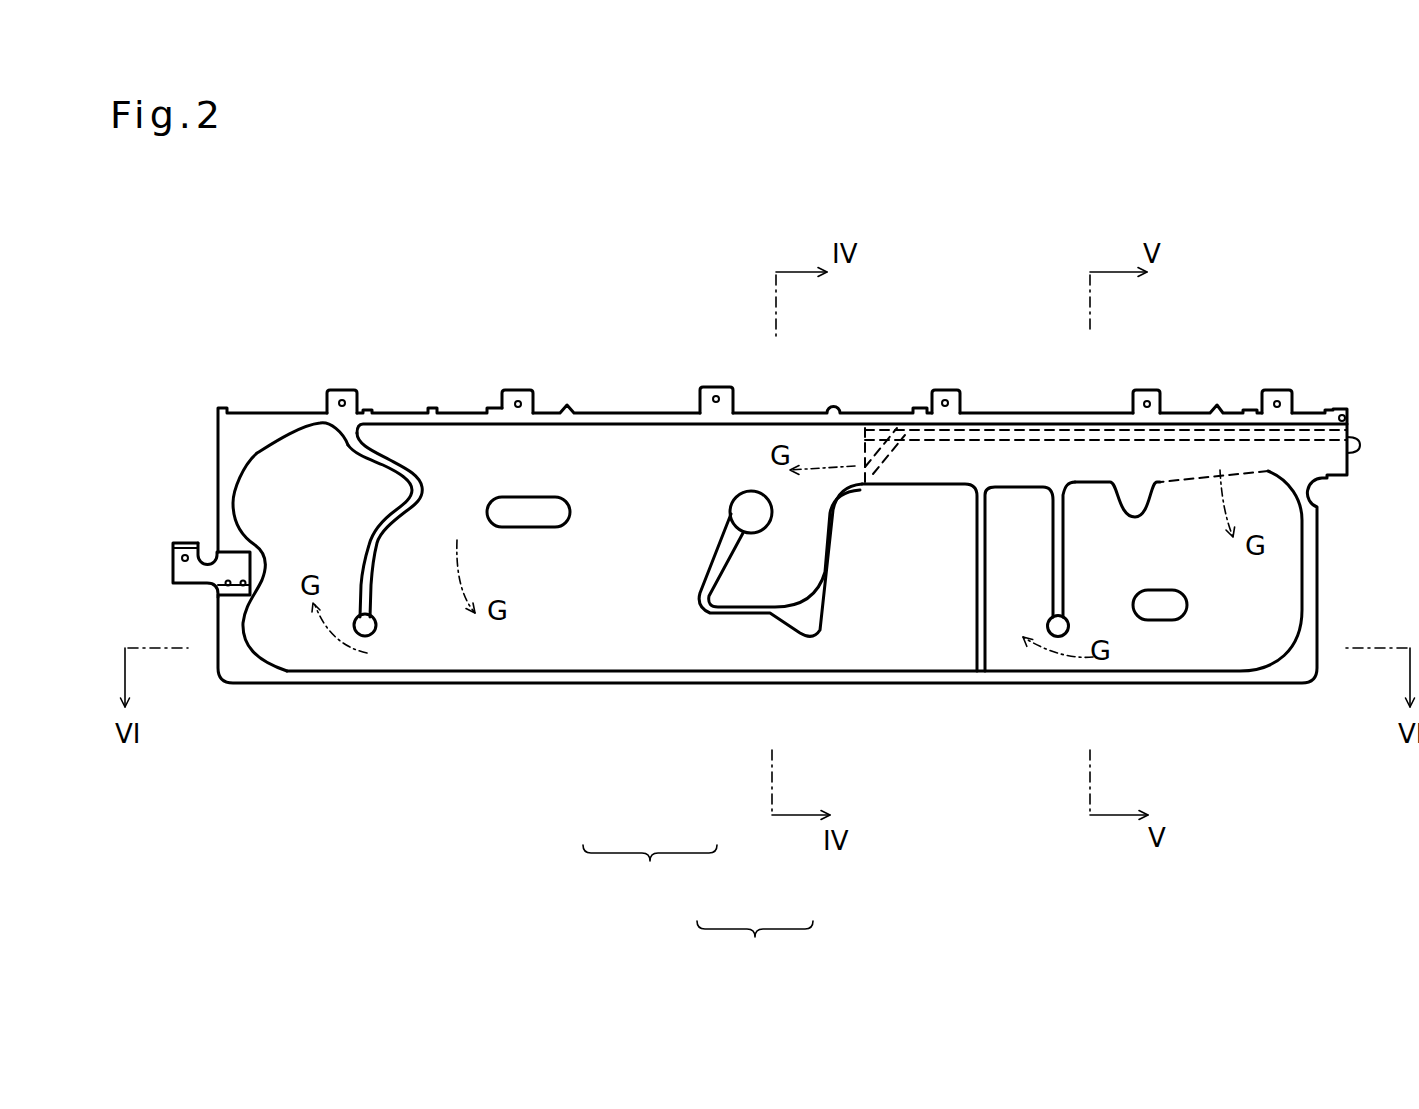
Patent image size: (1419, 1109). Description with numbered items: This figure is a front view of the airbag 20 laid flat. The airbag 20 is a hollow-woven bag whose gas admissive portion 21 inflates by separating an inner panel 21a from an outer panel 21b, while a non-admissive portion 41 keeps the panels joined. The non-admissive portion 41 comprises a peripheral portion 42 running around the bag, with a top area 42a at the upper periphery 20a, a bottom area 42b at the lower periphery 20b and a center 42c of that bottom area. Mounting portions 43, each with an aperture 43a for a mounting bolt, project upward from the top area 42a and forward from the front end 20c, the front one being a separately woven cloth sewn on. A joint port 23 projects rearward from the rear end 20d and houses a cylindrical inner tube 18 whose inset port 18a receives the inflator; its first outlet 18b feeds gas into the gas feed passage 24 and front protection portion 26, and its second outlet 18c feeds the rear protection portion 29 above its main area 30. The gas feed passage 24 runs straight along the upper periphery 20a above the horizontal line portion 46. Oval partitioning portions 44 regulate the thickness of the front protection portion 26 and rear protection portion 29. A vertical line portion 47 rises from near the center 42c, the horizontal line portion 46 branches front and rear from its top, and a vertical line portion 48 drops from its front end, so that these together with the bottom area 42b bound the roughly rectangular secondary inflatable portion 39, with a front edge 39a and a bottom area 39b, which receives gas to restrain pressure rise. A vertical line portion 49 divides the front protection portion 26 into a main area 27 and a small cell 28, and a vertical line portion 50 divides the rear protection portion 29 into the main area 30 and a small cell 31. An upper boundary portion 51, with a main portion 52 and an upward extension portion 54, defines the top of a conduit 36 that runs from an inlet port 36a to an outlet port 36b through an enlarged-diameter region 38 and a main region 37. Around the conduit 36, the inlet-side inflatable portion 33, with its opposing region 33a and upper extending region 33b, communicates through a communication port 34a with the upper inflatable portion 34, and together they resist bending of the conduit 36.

The inner tube 18 is at (1180, 463).
The inset port 18a is at (1358, 453).
The first outlet 18b is at (897, 428).
The second outlet 18c is at (1218, 465).
The airbag 20 is at (258, 278).
The upper periphery 20a is at (622, 417).
The lower periphery 20b is at (395, 678).
The front end 20c is at (227, 472).
The rear end 20d is at (1320, 583).
The gas admissive portion 21 is at (443, 655).
The inner panel 21a is at (320, 658).
The outer panel 21b is at (290, 650).
The joint port 23 is at (1312, 450).
The gas feed passage 24 is at (978, 467).
The front protection portion 26 is at (553, 706).
The main area 27 is at (510, 467).
The small cell 28 is at (300, 477).
The rear protection portion 29 is at (1297, 704).
The main area 30 is at (1207, 620).
The small cell 31 is at (1013, 605).
The inlet-side inflatable portion 33 is at (650, 871).
The opposing region 33a is at (670, 650).
The upper extending region 33b is at (645, 523).
The upper inflatable portion 34 is at (813, 447).
The communication port 34a is at (747, 467).
The conduit 36 is at (755, 946).
The inlet port 36a is at (707, 647).
The outlet port 36b is at (820, 652).
The main region 37 is at (783, 650).
The enlarged-diameter region 38 is at (731, 645).
The secondary inflatable portion 39 is at (923, 650).
The front edge 39a is at (833, 573).
The bottom area 39b is at (893, 650).
The non-admissive portion 41 is at (410, 413).
The peripheral portion 42 is at (438, 342).
The top area 42a is at (662, 417).
The bottom area 42b is at (1065, 683).
The center 42c is at (863, 683).
The mounting portion 43 is at (340, 405).
The aperture 43a is at (343, 405).
The partitioning portion 44 is at (537, 510).
The horizontal line portion 46 is at (1043, 395).
The vertical line portion 47 is at (973, 738).
The vertical line portion 48 is at (906, 577).
The vertical line portion 49 is at (335, 503).
The vertical line portion 50 is at (1076, 501).
The upper boundary portion 51 is at (780, 560).
The main portion 52 is at (745, 610).
The extension portion 54 is at (712, 562).